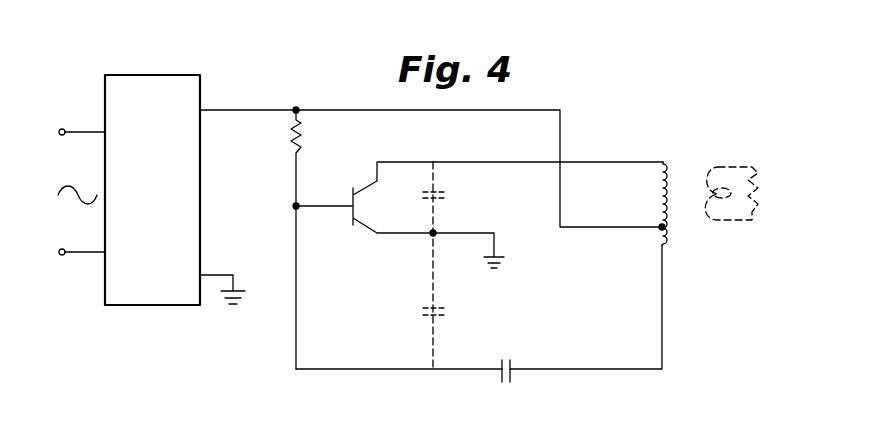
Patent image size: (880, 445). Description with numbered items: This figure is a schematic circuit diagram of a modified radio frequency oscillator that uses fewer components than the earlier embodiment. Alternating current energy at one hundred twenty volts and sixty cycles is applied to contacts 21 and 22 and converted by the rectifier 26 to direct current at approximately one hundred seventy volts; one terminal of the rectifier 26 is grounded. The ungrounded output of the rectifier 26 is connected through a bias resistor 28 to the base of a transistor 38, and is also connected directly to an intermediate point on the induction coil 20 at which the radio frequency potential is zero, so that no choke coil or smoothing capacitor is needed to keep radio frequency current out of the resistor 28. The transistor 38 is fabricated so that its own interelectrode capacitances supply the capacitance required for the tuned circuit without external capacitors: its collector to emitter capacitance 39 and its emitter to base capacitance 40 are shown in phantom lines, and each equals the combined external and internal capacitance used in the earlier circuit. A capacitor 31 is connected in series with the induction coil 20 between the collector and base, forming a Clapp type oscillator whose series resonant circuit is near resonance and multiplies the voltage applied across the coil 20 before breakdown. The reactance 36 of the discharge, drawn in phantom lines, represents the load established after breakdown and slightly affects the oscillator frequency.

The induction coil 20 is at (670, 247).
The contact 21 is at (70, 103).
The contact 22 is at (58, 255).
The rectifier 26 is at (160, 75).
The bias resistor 28 is at (290, 142).
The capacitor 31 is at (511, 378).
The discharge reactance 36 is at (735, 220).
The transistor 38 is at (345, 232).
The collector to emitter capacitance 39 is at (446, 198).
The emitter to base capacitance 40 is at (446, 315).